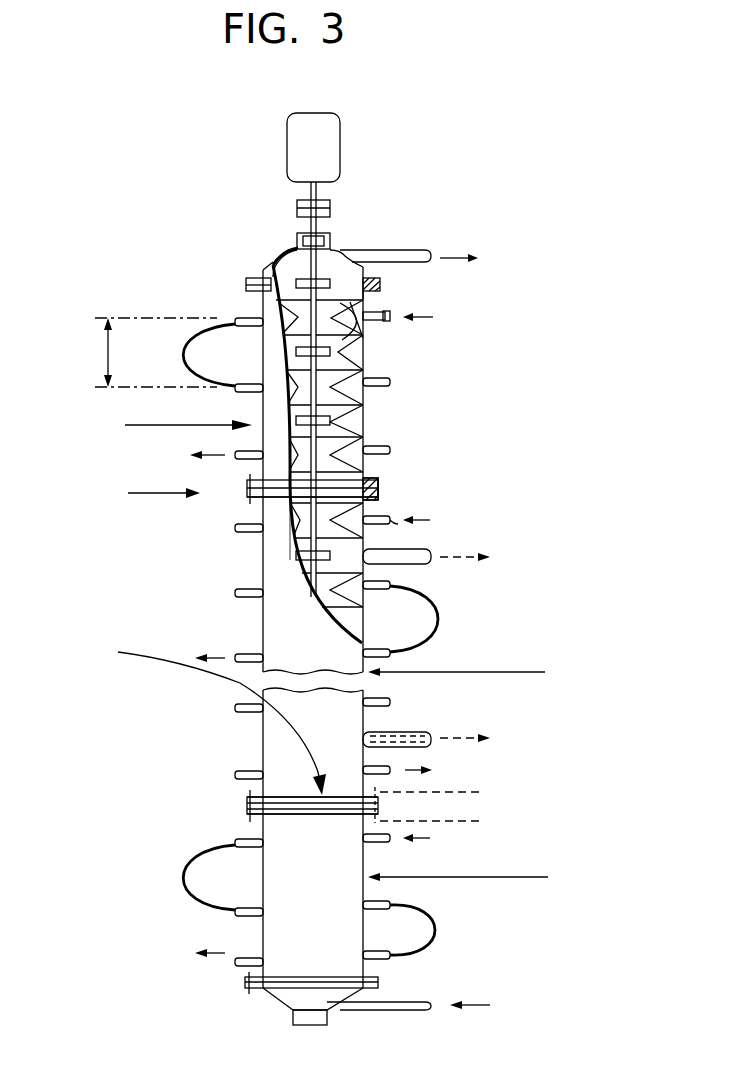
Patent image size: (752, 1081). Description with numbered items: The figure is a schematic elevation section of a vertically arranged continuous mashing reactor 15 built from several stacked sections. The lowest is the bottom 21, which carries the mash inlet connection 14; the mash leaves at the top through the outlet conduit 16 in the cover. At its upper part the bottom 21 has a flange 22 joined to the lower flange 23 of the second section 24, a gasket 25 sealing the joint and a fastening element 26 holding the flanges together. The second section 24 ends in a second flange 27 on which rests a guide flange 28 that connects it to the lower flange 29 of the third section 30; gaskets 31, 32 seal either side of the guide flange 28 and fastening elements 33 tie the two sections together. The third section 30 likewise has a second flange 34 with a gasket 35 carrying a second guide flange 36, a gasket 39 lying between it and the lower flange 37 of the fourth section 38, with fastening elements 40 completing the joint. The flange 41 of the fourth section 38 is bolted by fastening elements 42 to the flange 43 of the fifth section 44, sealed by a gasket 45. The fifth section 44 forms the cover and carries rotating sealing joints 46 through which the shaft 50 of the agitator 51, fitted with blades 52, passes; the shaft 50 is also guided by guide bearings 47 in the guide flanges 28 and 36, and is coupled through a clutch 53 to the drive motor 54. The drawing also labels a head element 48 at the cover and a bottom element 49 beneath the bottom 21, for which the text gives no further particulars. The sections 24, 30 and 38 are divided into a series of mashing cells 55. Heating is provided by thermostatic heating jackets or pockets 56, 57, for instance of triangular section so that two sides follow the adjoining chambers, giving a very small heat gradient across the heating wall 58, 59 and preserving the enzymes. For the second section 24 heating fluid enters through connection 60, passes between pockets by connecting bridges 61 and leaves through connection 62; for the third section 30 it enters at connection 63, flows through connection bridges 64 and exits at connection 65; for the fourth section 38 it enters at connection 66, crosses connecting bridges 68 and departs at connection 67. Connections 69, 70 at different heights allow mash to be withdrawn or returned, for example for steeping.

The mash inlet connection 14 is at (408, 1006).
The continuous mashing reactor 15 is at (149, 492).
The outlet conduit 16 is at (380, 280).
The bottom 21 is at (285, 1000).
The flange 22 is at (250, 987).
The lower flange 23 is at (380, 963).
The second section 24 is at (422, 839).
The gasket 25 is at (245, 984).
The fastening element 26 is at (375, 1000).
The second flange 27 is at (247, 815).
The guide flange 28 is at (380, 808).
The lower flange 29 is at (248, 795).
The third section 30 is at (472, 672).
The gasket 31 is at (480, 822).
The gasket 32 is at (480, 792).
The fastening elements 33 is at (247, 803).
The second flange 34 is at (248, 505).
The gasket 35 is at (392, 517).
The second guide flange 36 is at (247, 485).
The lower flange 37 is at (380, 485).
The fourth section 38 is at (172, 427).
The gasket 39 is at (380, 497).
The fastening elements 40 is at (250, 477).
The flange 41 is at (380, 307).
The fastening elements 42 is at (262, 296).
The flange 43 is at (256, 285).
The fifth section 44 is at (297, 237).
The gasket 45 is at (380, 287).
The rotating sealing joints 46 is at (345, 250).
The guide bearings 47 is at (297, 553).
The outlet pipe 48 is at (422, 257).
The bottom outlet 49 is at (327, 1018).
The shaft 50 is at (316, 225).
The agitator 51 is at (380, 478).
The blades 52 is at (183, 353).
The clutch 53 is at (297, 208).
The drive motor 54 is at (327, 143).
The mashing cells 55 is at (108, 352).
The thermostatic heating jacket 56 is at (355, 324).
The thermostatic heating jacket 57 is at (385, 383).
The heating wall 58 is at (366, 322).
The heating wall 59 is at (370, 345).
The connection 60 is at (392, 842).
The connecting bridges 61 is at (183, 882).
The connection 62 is at (243, 960).
The connection 63 is at (390, 524).
The connection bridges 64 is at (440, 617).
The connection 65 is at (392, 768).
The connection 66 is at (416, 316).
The connection 67 is at (243, 460).
The connecting bridges 68 is at (365, 418).
The connection 69 is at (425, 560).
The connection 70 is at (427, 745).